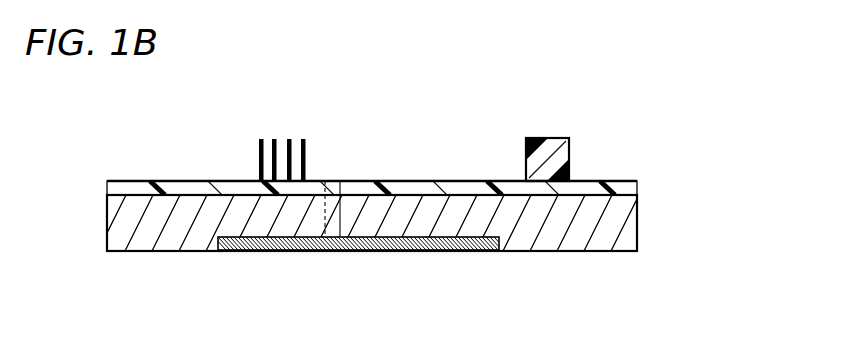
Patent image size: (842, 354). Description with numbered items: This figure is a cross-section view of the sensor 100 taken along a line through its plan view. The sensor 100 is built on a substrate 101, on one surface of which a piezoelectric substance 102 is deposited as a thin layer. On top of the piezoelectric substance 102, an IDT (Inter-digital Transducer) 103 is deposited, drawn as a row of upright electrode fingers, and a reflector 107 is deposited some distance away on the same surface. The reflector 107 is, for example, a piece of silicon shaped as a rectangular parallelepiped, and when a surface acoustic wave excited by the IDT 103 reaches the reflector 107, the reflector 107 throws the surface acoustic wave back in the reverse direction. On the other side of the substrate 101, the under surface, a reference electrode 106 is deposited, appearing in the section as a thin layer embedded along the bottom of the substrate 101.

The sensor 100 is at (651, 92).
The substrate 101 is at (638, 237).
The piezoelectric substance 102 is at (638, 181).
The IDT (Inter-digital Transducer) 103 is at (302, 138).
The reference electrode 106 is at (300, 253).
The reflector 107 is at (550, 137).